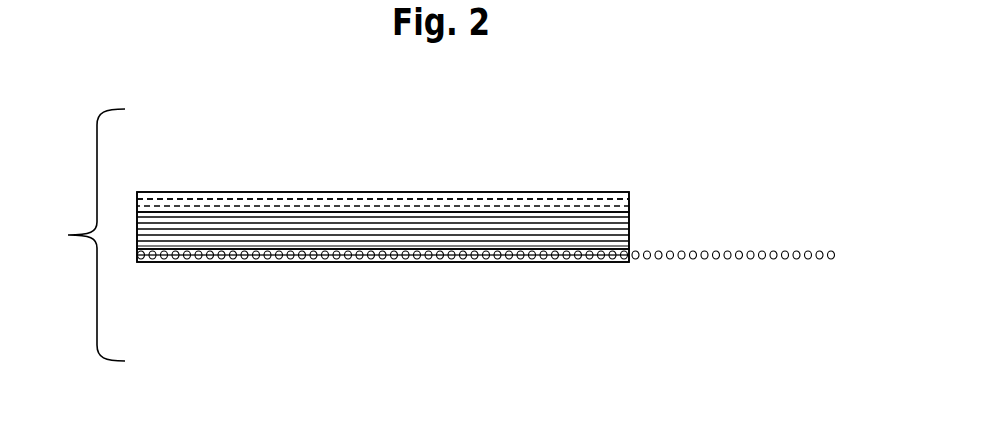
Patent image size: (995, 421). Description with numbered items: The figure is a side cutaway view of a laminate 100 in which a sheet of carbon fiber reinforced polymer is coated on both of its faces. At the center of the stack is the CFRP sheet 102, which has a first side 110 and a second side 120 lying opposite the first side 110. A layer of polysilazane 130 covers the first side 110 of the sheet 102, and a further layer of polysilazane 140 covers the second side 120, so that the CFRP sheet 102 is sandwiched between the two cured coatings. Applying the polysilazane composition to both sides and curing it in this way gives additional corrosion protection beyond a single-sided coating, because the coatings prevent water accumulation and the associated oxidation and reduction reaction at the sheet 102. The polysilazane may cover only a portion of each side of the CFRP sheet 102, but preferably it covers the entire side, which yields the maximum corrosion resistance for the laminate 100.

The laminate 100 is at (320, 235).
The CFRP sheet 102 is at (629, 222).
The first side 110 is at (333, 211).
The second side 120 is at (405, 253).
The layer of polysilazane 130 is at (629, 192).
The layer of polysilazane 140 is at (629, 255).